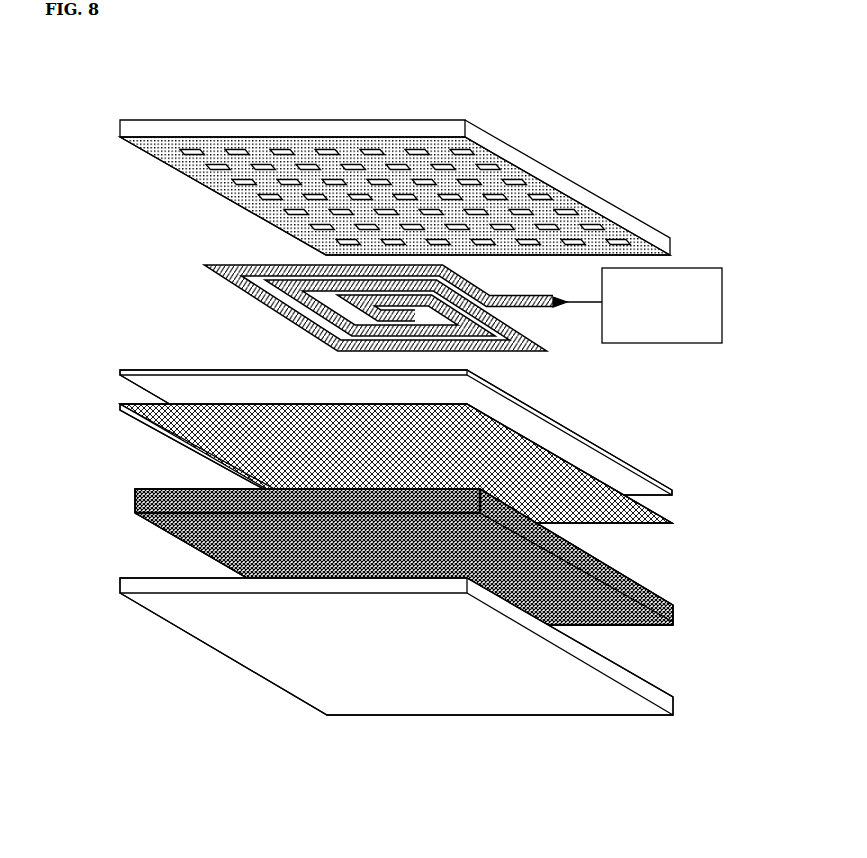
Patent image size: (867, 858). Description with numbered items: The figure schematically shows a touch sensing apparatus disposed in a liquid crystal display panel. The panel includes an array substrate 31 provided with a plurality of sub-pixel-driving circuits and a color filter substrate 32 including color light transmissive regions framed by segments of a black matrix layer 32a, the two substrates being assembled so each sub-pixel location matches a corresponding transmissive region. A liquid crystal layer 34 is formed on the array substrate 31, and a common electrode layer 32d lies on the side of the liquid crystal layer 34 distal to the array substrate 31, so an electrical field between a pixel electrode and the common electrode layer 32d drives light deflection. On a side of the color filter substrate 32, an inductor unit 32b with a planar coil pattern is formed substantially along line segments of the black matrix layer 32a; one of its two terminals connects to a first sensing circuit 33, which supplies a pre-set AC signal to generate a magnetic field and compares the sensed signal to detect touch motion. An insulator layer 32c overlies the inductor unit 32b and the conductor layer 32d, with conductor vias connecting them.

The array substrate 31 is at (121, 592).
The color filter substrate 32 is at (136, 132).
The black matrix layer 32a is at (233, 150).
The inductor unit 32b is at (218, 275).
The insulator layer 32c is at (130, 372).
The common electrode layer 32d is at (132, 408).
The first sensing circuit 33 is at (692, 268).
The liquid crystal layer 34 is at (157, 500).